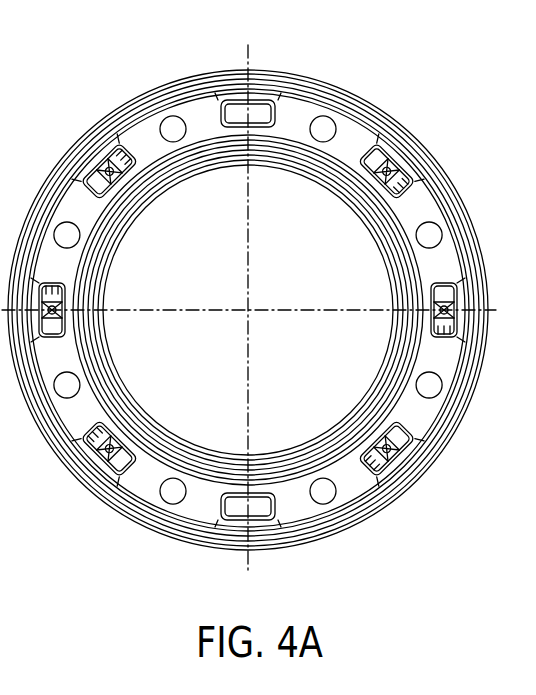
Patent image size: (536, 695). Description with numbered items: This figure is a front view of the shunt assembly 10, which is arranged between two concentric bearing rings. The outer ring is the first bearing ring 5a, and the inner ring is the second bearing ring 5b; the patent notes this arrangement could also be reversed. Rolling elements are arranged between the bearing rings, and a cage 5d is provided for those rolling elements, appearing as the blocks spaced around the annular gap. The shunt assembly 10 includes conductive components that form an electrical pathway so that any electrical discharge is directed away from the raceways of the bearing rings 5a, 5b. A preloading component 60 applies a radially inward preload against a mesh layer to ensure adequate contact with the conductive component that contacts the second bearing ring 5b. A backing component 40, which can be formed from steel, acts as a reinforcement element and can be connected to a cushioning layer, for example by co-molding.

The first bearing ring 5a is at (122, 108).
The second bearing ring 5b is at (120, 228).
The cage 5d is at (88, 143).
The shunt assembly 10 is at (193, 78).
The backing component 40 is at (348, 133).
The preloading component 60 is at (345, 455).